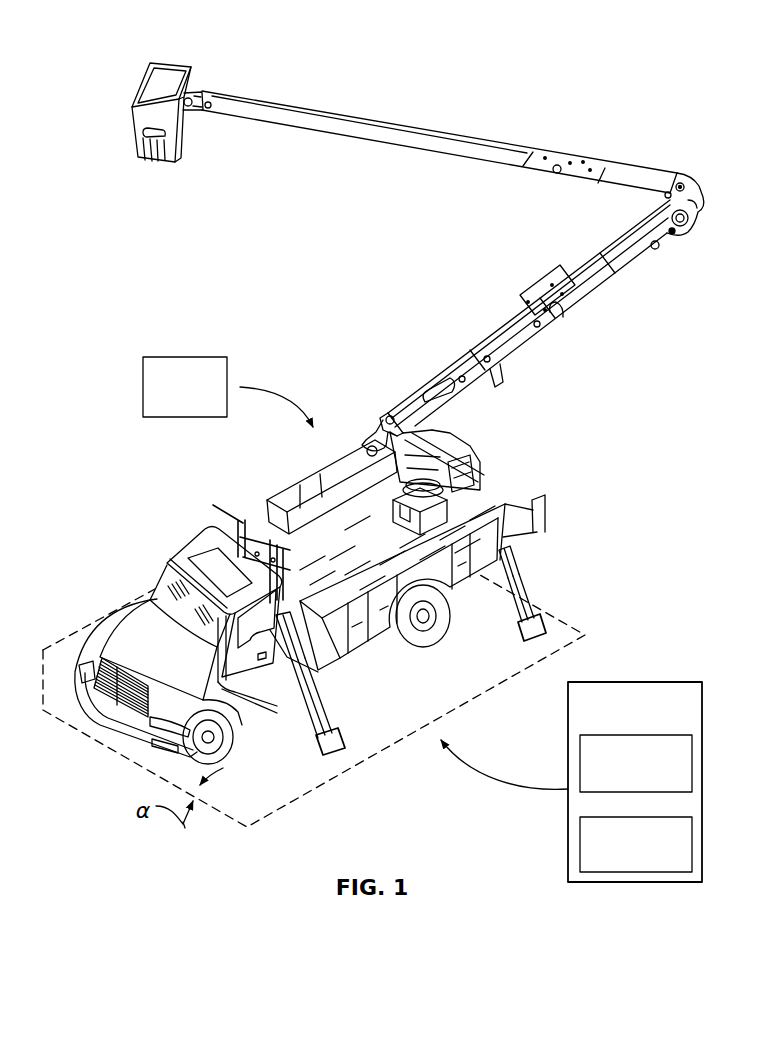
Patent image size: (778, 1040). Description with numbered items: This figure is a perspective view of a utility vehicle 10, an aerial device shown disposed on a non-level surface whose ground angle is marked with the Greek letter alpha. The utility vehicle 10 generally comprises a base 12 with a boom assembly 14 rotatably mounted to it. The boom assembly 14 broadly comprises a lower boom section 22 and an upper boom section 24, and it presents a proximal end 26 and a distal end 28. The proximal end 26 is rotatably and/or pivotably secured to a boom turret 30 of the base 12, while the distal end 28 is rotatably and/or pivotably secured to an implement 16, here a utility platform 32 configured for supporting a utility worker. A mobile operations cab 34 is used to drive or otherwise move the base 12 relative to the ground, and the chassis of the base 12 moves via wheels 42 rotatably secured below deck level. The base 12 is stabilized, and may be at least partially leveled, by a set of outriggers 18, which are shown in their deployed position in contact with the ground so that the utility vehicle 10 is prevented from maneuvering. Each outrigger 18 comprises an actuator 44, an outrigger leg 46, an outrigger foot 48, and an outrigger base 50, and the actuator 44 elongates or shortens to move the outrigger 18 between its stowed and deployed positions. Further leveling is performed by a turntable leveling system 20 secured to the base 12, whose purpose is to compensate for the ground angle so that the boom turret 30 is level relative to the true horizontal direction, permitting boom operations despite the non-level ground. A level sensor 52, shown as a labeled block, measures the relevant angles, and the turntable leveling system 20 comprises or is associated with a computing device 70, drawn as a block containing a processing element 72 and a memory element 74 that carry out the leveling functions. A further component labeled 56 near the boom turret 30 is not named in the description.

The utility vehicle 10 is at (598, 30).
The base 12 is at (99, 540).
The boom assembly 14 is at (468, 186).
The implement 16 is at (100, 110).
The outriggers 18 is at (351, 714).
The turntable leveling system 20 is at (385, 514).
The lower boom section 22 is at (572, 305).
The upper boom section 24 is at (343, 107).
The proximal end 26 is at (398, 393).
The distal end 28 is at (199, 123).
The boom turret 30 is at (373, 452).
The utility platform 32 is at (166, 63).
The mobile operations cab 34 is at (183, 548).
The wheels 42 is at (216, 745).
The actuator 44 is at (320, 698).
The outrigger leg 46 is at (288, 661).
The outrigger foot 48 is at (344, 742).
The outrigger base 50 is at (443, 510).
The level sensor 52 is at (186, 357).
The boom pivot bracket 56 is at (460, 505).
The computing device 70 is at (608, 682).
The processing element 72 is at (694, 763).
The memory element 74 is at (694, 849).